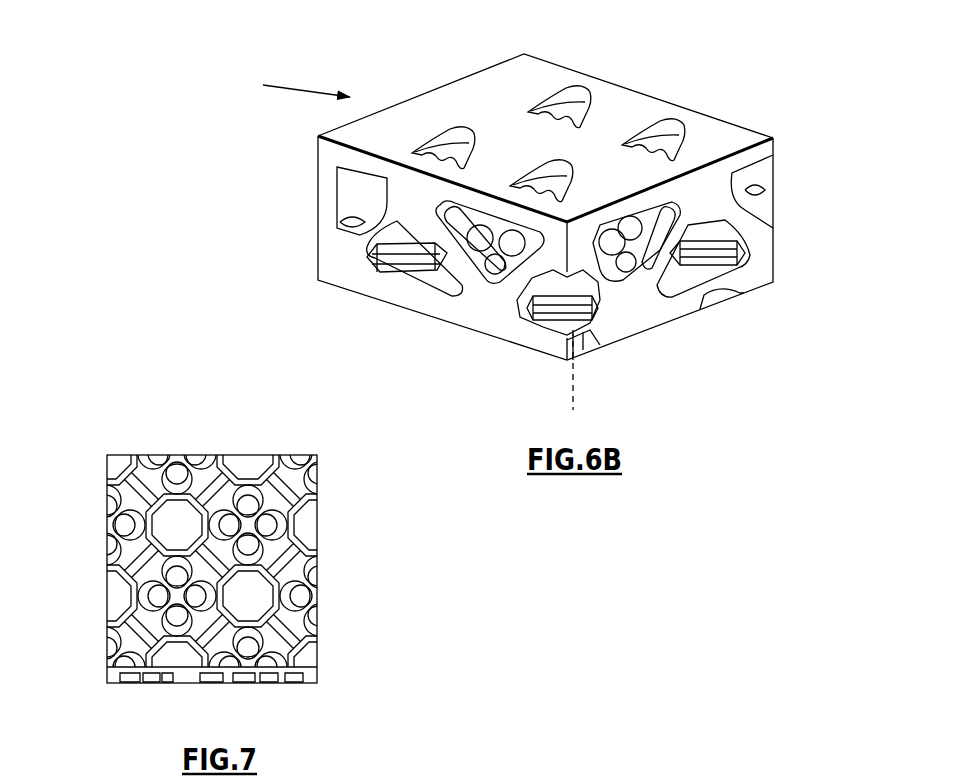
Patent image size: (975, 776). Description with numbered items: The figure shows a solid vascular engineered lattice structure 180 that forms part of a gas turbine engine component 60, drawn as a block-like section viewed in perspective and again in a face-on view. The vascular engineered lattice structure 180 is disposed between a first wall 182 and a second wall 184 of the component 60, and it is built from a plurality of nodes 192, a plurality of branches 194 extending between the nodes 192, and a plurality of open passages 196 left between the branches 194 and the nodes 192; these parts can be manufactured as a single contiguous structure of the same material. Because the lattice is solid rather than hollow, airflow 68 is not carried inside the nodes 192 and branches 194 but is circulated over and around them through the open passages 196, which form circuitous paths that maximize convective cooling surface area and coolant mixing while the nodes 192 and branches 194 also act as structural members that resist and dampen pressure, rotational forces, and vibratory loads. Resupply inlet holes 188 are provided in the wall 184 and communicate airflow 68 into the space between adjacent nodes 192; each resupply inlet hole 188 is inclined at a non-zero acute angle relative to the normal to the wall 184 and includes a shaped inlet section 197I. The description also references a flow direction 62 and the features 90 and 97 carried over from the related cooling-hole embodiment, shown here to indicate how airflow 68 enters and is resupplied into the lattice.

In FIG. 6B, the component 60 is at (688, 58).
In FIG. 6B, the feed direction 62 is at (290, 92).
In FIG. 6B, the airflow 68 is at (686, 228).
In FIG. 6B, the cutting tooth 90 is at (592, 82).
In FIG. 6B, the cutting edge 97 is at (557, 102).
In FIG. 6B, the vascular engineered lattice structure 180 is at (310, 172).
In FIG. 6B, the first wall 182 is at (427, 93).
In FIG. 6B, the second wall 184 is at (400, 308).
In FIG. 6B, the resupply inlet holes 188 is at (560, 352).
In FIG. 6B, the nodes 192 is at (415, 203).
In FIG. 7, the nodes 192 is at (247, 467).
In FIG. 6B, the branches 194 is at (340, 216).
In FIG. 7, the branches 194 is at (147, 477).
In FIG. 6B, the open passages 196 is at (720, 228).
In FIG. 7, the open passages 196 is at (250, 490).
In FIG. 6B, the inlet section 197I is at (745, 302).